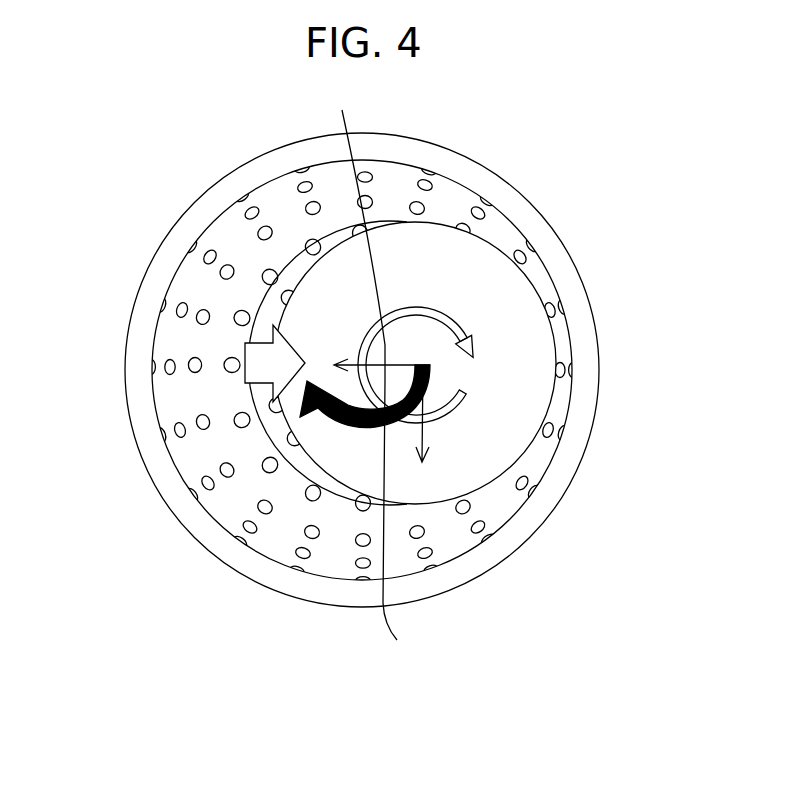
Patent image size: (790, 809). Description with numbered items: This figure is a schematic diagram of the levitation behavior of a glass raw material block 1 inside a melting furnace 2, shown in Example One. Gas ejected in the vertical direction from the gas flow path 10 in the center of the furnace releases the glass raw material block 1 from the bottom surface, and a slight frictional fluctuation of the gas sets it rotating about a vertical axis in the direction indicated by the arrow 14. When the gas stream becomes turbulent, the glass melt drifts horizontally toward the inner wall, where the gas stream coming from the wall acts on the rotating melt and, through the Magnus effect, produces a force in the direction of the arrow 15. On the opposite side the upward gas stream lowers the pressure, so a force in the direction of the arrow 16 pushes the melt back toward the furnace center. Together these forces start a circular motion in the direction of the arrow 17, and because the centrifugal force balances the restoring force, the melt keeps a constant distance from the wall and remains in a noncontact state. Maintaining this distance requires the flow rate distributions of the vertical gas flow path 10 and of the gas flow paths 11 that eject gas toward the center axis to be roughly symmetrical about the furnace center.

The glass raw material block 1 is at (525, 340).
The melting furnace 2 is at (152, 266).
The gas flow path 10 is at (242, 318).
The gas flow paths 11 is at (573, 370).
The arrow 14 is at (455, 317).
The arrow 15 is at (425, 438).
The arrow 16 is at (358, 231).
The arrow 17 is at (401, 526).